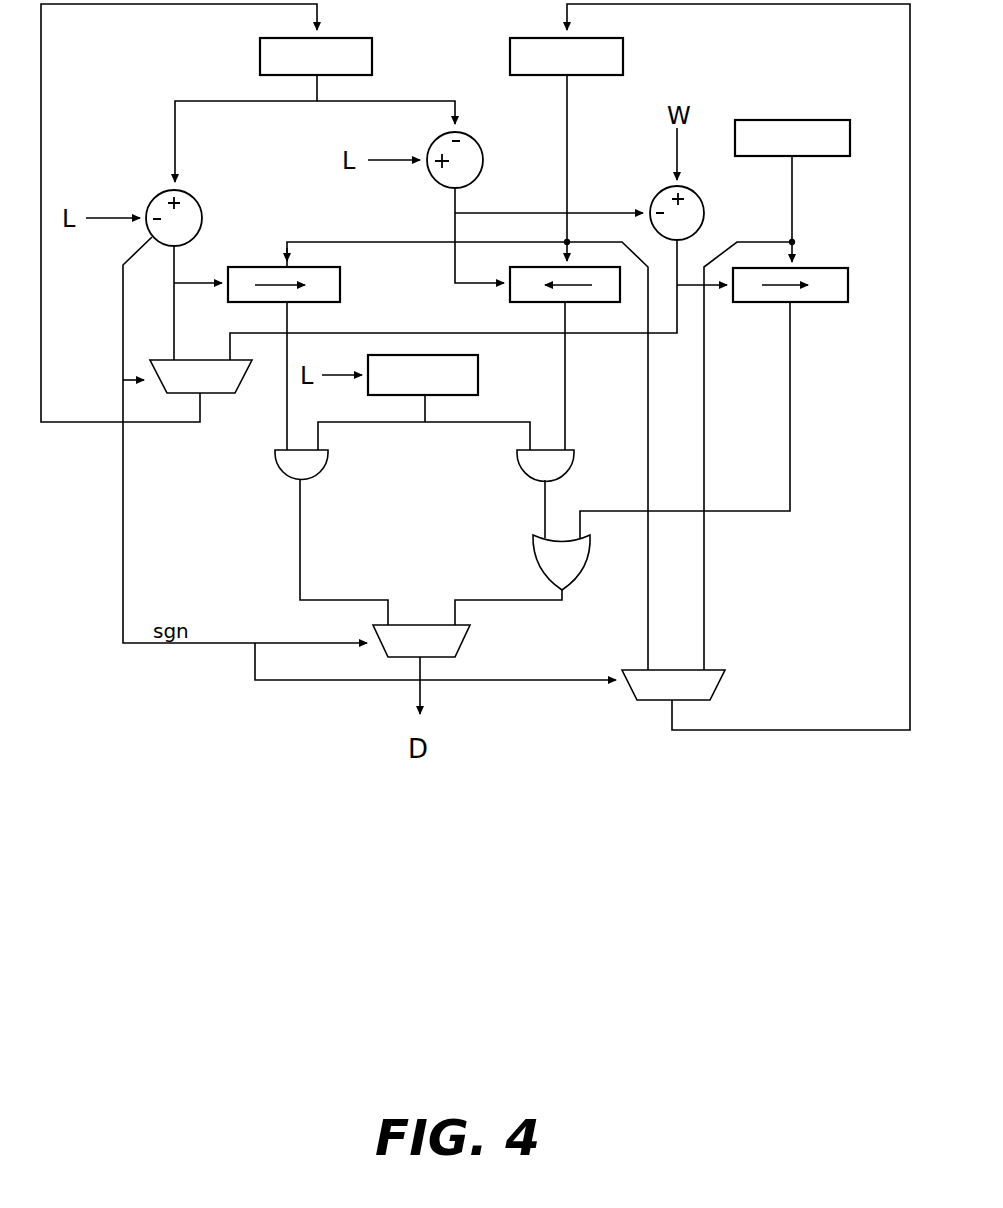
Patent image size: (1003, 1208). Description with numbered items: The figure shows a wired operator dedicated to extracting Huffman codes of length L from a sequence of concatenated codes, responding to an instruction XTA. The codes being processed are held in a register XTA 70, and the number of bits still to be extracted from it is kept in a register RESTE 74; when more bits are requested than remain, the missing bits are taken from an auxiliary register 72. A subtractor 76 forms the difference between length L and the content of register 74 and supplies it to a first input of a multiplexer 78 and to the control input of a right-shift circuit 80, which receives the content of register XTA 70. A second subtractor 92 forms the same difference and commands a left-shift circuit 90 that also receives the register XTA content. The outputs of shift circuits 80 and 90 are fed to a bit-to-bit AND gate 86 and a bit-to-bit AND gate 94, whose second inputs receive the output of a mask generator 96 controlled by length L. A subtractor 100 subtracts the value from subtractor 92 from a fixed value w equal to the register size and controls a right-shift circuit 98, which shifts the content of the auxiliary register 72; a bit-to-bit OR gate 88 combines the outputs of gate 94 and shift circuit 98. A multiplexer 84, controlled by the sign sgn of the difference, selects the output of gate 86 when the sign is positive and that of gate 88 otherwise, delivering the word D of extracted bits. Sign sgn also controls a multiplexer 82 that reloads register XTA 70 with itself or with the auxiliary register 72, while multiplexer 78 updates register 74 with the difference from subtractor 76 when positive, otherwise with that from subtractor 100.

The register XTA 70 is at (623, 56).
The auxiliary register 72 is at (850, 135).
The register RESTE 74 is at (372, 55).
The subtractor 76 is at (203, 213).
The multiplexer 78 is at (217, 393).
The right-shift circuit 80 is at (340, 282).
The multiplexer 82 is at (718, 688).
The multiplexer 84 is at (470, 640).
The bit-to-bit AND gate 86 is at (322, 466).
The bit-to-bit OR gate 88 is at (545, 560).
The left-shift circuit 90 is at (520, 298).
The subtractor 92 is at (478, 148).
The bit-to-bit AND gate 94 is at (529, 468).
The mask generator 96 is at (385, 395).
The right-shift circuit 98 is at (838, 285).
The subtractor 100 is at (702, 210).